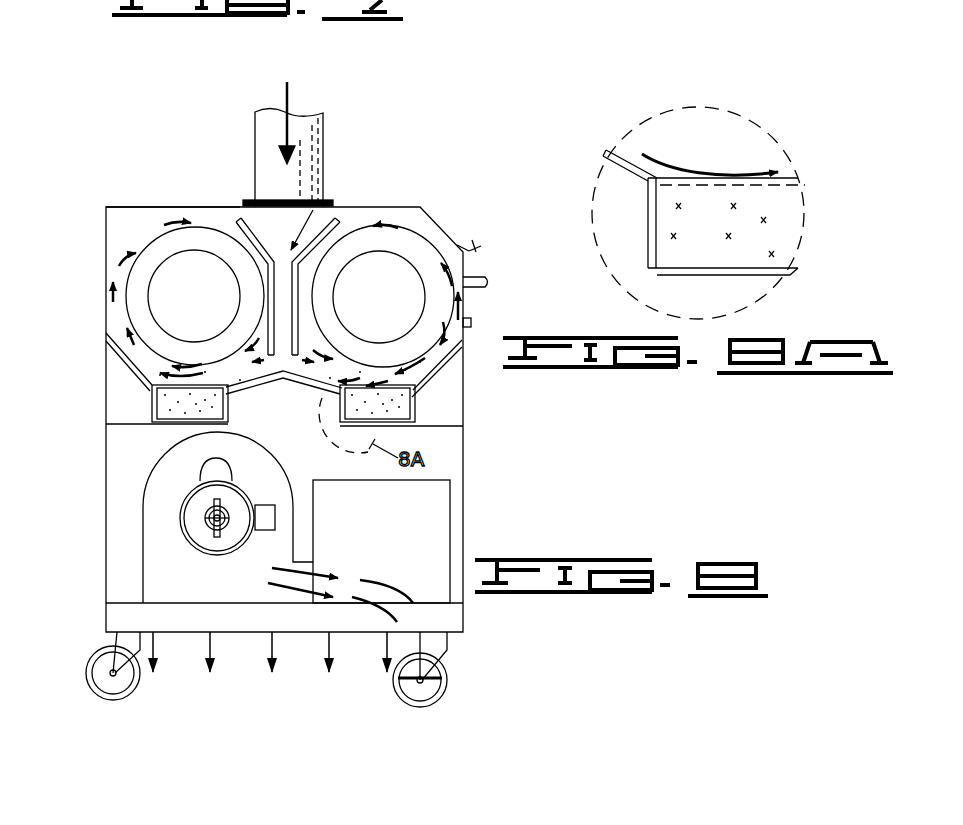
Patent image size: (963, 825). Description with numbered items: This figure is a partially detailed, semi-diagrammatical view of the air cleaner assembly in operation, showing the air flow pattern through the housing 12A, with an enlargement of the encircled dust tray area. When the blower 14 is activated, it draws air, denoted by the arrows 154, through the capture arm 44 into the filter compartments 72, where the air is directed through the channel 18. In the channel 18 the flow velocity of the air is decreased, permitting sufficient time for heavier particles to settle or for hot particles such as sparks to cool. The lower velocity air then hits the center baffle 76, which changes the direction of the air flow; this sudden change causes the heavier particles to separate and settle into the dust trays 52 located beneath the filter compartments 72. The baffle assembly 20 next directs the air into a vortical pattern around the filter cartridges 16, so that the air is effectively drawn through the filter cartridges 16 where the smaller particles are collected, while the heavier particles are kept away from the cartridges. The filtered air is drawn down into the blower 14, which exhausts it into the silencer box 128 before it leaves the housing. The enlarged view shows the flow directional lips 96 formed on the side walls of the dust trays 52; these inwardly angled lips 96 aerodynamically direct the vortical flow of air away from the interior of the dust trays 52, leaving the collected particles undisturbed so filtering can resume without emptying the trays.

In FIG. 8, the housing 12A is at (100, 272).
In FIG. 8, the blower 14 is at (143, 530).
In FIG. 8, the filter cartridges 16 is at (158, 232).
In FIG. 8, the channel 18 is at (320, 204).
In FIG. 8, the baffle assembly 20 is at (456, 371).
In FIG. 8, the capture arm 44 is at (257, 156).
In FIG. 8, the dust trays 52 is at (152, 407).
In FIG. 8A, the dust trays 52 is at (712, 258).
In FIG. 8, the filter compartments 72 is at (120, 230).
In FIG. 8, the center baffle 76 is at (258, 388).
In FIG. 8A, the center baffle 76 is at (632, 168).
In FIG. 8A, the flow directional lips 96 is at (808, 191).
In FIG. 8, the silencer box 128 is at (452, 520).
In FIG. 8, the arrows 154 is at (210, 384).
In FIG. 8A, the arrows 154 is at (682, 168).